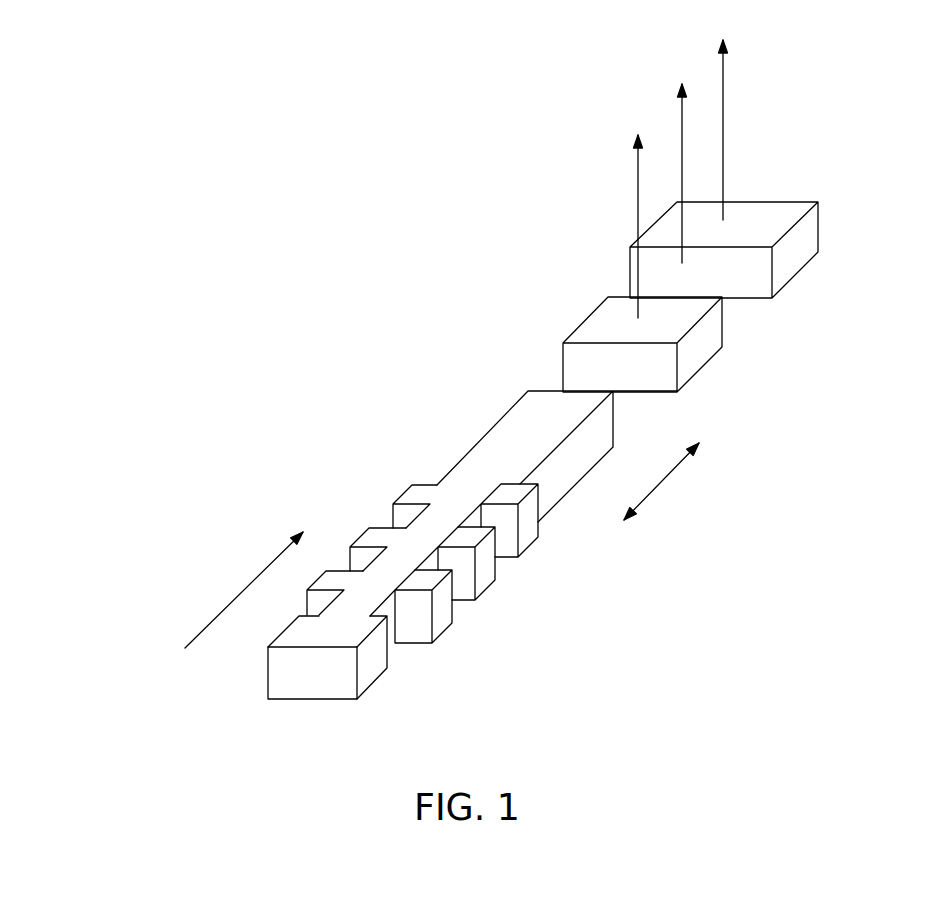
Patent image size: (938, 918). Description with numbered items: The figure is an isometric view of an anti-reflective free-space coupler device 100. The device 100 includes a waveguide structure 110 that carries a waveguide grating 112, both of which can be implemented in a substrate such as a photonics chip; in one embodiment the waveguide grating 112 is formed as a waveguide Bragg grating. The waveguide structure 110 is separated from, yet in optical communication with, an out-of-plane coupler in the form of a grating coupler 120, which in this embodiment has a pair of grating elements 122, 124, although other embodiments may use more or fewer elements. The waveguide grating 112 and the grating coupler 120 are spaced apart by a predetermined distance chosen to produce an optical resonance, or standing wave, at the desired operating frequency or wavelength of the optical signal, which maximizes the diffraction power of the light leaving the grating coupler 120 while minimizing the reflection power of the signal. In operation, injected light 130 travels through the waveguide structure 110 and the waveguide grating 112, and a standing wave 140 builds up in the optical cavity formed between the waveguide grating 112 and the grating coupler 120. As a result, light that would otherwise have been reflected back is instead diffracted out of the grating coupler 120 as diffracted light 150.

The anti-reflective free-space coupler device 100 is at (311, 197).
The waveguide structure 110 is at (474, 447).
The waveguide grating 112 is at (450, 661).
The grating coupler 120 is at (715, 381).
The grating element 122 is at (591, 314).
The grating element 124 is at (815, 225).
The injected light 130 is at (229, 605).
The standing wave 140 is at (718, 493).
The diffracted light 150 is at (718, 32).